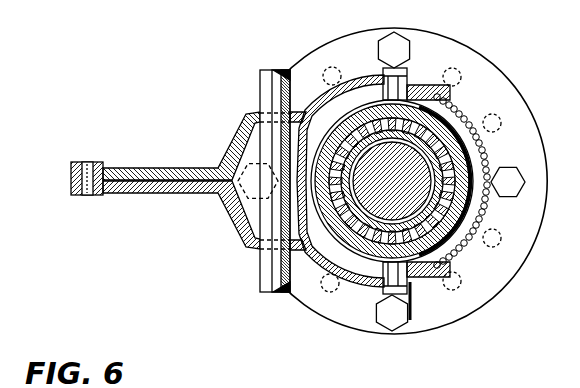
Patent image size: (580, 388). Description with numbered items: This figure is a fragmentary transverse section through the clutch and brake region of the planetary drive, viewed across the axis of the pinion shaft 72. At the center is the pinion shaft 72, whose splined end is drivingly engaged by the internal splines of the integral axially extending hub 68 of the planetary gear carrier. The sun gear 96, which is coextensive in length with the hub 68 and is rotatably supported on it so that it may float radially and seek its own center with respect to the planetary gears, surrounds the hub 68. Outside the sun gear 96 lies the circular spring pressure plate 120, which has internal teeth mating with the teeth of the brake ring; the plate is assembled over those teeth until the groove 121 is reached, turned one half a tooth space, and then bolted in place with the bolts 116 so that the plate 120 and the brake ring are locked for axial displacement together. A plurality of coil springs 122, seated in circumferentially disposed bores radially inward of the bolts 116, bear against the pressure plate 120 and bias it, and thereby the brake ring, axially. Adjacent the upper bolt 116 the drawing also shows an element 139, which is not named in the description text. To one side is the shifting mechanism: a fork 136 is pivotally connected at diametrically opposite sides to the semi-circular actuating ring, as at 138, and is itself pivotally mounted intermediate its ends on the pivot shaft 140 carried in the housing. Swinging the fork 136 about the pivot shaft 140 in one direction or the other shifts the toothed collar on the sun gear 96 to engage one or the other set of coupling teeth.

The hub 68 is at (468, 203).
The pinion shaft 72 is at (404, 189).
The sun gear 96 is at (470, 163).
The bolts 116 is at (400, 43).
The spring pressure plate 120 is at (320, 310).
The groove 121 is at (476, 108).
The coil springs 122 is at (466, 273).
The fork 136 is at (171, 147).
The pivotal connection 138 is at (380, 287).
The spacer 139 is at (377, 74).
The pivot shaft 140 is at (267, 86).